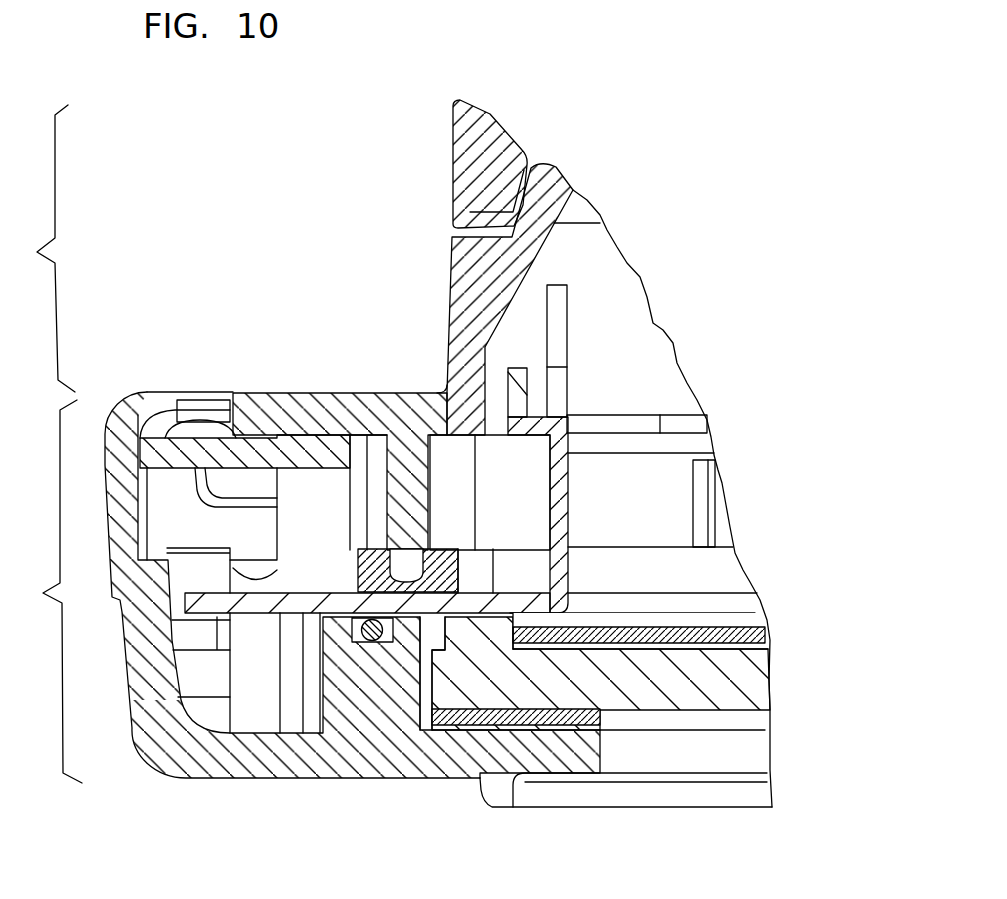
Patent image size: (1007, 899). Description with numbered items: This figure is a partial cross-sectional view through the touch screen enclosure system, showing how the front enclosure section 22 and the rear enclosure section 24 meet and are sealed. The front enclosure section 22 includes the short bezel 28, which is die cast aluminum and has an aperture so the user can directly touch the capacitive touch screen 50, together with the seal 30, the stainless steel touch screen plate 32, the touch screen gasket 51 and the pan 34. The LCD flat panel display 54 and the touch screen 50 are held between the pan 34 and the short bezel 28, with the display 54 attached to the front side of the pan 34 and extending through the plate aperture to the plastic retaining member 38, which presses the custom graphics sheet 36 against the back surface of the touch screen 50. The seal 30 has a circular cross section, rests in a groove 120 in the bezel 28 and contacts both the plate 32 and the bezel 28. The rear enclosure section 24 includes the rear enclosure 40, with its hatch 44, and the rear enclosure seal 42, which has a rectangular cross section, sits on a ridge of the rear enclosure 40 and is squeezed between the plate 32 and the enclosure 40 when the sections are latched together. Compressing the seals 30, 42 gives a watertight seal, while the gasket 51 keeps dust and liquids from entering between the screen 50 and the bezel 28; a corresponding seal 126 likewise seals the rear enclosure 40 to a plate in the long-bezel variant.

The front enclosure section 22 is at (44, 591).
The rear enclosure section 24 is at (39, 248).
The short bezel 28 is at (265, 780).
The seal 30 is at (363, 643).
The touch screen plate 32 is at (197, 609).
The pan 34 is at (617, 415).
The custom graphics sheet 36 is at (750, 635).
The plastic retaining member 38 is at (713, 600).
The rear enclosure 40 is at (450, 282).
The rear enclosure seal 42 is at (358, 549).
The hatch 44 is at (497, 115).
The capacitive touch screen 50 is at (417, 720).
The touch screen gasket 51 is at (440, 712).
The LCD flat panel display 54 is at (703, 482).
The groove 120 is at (350, 643).
The seal 126 is at (430, 513).